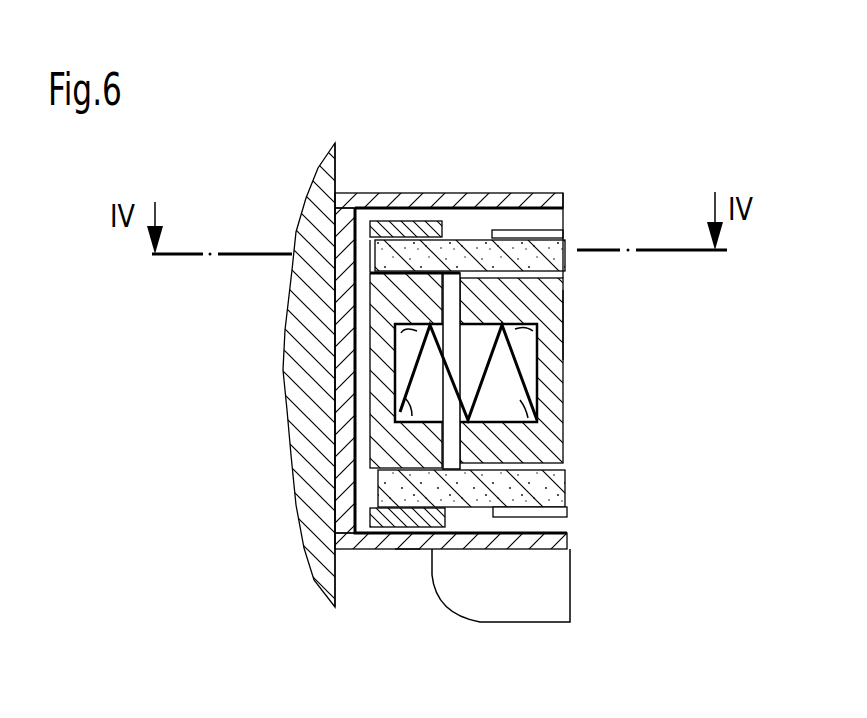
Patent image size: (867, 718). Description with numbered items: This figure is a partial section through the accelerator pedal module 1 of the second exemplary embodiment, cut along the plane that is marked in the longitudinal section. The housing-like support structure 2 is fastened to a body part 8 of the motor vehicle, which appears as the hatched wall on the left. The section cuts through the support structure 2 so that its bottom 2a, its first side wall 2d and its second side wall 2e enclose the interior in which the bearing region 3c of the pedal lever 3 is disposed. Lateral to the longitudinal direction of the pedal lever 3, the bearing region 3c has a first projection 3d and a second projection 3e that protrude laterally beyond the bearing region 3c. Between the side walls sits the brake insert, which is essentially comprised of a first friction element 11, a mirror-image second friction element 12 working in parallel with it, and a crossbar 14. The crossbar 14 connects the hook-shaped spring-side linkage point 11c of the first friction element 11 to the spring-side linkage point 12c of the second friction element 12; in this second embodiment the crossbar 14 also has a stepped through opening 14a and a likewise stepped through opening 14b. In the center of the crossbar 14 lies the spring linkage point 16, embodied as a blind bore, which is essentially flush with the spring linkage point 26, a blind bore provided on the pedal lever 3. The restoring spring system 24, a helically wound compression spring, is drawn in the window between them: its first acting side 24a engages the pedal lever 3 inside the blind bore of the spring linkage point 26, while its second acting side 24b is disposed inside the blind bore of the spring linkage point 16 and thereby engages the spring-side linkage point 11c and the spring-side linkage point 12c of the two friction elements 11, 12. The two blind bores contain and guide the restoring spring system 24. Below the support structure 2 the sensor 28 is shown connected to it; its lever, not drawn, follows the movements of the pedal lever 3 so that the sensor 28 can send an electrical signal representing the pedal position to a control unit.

The accelerator pedal module 1 is at (641, 110).
The support structure 2 is at (389, 380).
The bottom 2a is at (343, 408).
The first side wall 2d is at (447, 193).
The second side wall 2e is at (495, 549).
The pedal lever 3 is at (557, 303).
The bearing region 3c is at (563, 323).
The first projection 3d is at (533, 230).
The second projection 3e is at (535, 549).
The body part 8 is at (293, 335).
The first friction element 11 is at (565, 250).
The spring-side linkage point 11c is at (397, 225).
The second friction element 12 is at (567, 492).
The spring-side linkage point 12c is at (407, 549).
The crossbar 14 is at (410, 450).
The stepped through opening 14a is at (372, 257).
The stepped through opening 14b is at (377, 510).
The spring linkage point 16 is at (395, 325).
The restoring spring system 24 is at (503, 383).
The first acting side 24a is at (527, 420).
The second acting side 24b is at (402, 420).
The spring linkage point 26 is at (535, 322).
The sensor 28 is at (563, 592).